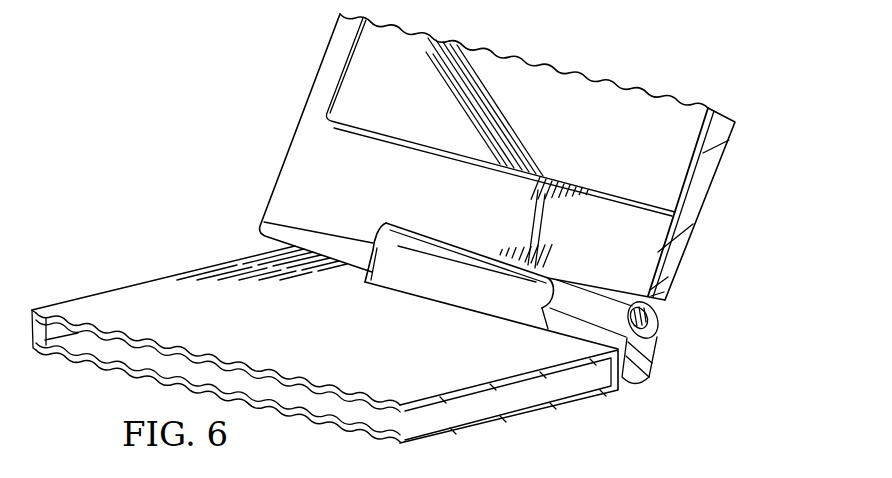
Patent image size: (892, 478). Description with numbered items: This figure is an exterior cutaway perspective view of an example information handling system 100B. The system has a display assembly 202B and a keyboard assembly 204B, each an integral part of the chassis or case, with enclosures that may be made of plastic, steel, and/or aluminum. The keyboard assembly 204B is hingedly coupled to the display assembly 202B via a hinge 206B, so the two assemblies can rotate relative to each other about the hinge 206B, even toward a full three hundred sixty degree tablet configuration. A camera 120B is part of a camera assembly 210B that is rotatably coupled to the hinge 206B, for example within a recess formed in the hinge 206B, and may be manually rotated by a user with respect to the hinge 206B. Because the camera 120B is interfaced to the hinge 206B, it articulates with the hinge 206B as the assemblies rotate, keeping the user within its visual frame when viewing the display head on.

The information handling system 100B is at (122, 128).
The display assembly 202B is at (693, 212).
The keyboard assembly 204B is at (512, 414).
The hinge 206B is at (490, 305).
The camera 120B is at (617, 310).
The camera assembly 210B is at (657, 326).